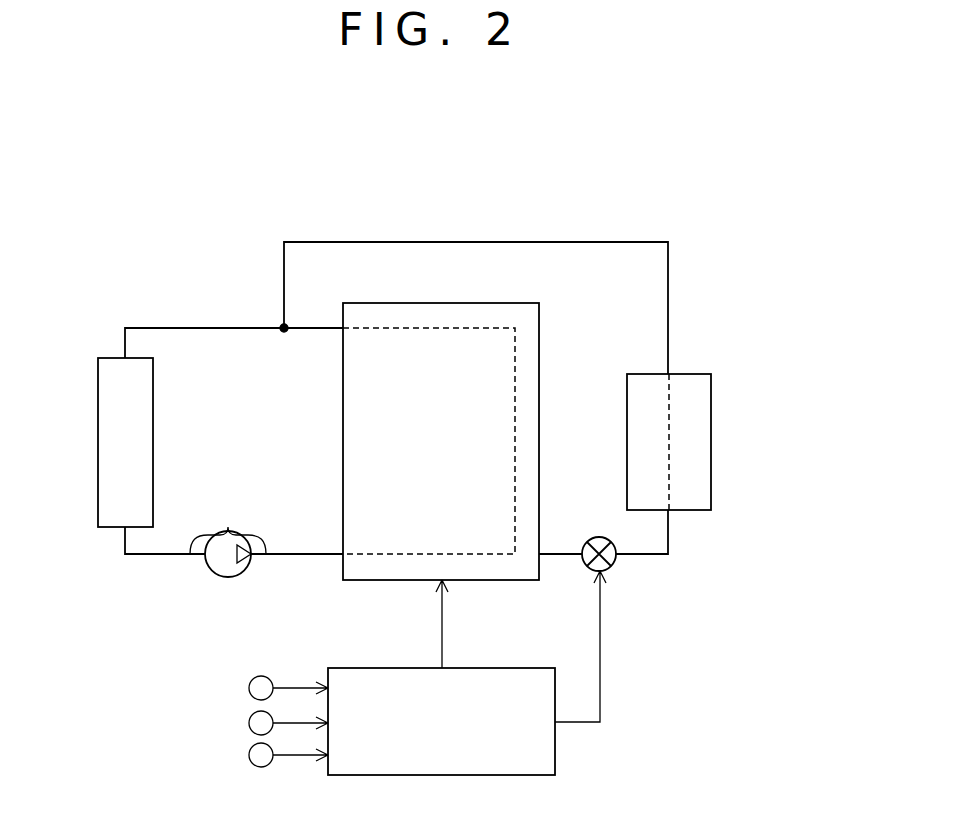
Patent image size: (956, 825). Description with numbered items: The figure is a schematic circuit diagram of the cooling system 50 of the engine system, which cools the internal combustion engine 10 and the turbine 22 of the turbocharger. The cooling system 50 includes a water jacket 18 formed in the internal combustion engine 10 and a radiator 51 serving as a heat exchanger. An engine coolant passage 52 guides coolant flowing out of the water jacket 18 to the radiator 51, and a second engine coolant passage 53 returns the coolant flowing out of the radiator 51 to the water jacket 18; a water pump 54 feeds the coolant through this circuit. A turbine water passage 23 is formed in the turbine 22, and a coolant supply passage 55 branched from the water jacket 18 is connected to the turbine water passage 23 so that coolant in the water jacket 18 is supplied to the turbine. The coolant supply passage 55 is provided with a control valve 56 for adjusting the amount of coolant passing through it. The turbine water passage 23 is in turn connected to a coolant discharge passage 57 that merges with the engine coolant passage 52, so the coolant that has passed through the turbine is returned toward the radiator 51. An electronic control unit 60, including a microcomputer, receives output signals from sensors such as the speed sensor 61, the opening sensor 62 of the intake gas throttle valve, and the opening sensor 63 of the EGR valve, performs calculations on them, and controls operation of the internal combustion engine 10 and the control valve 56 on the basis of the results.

The internal combustion engine 10 is at (376, 303).
The water jacket 18 is at (515, 397).
The turbine 22 is at (711, 389).
The turbine water passage 23 is at (669, 460).
The cooling system 50 is at (744, 289).
The radiator 51 is at (98, 441).
The engine coolant passage 52 is at (207, 327).
The engine coolant passage 53 is at (228, 561).
The water pump 54 is at (228, 578).
The coolant supply passage 55 is at (668, 530).
The control valve 56 is at (603, 536).
The coolant discharge passage 57 is at (478, 242).
The electronic control unit 60 is at (370, 667).
The speed sensor 61 is at (249, 688).
The opening sensor 62 is at (249, 723).
The opening sensor 63 is at (249, 755).